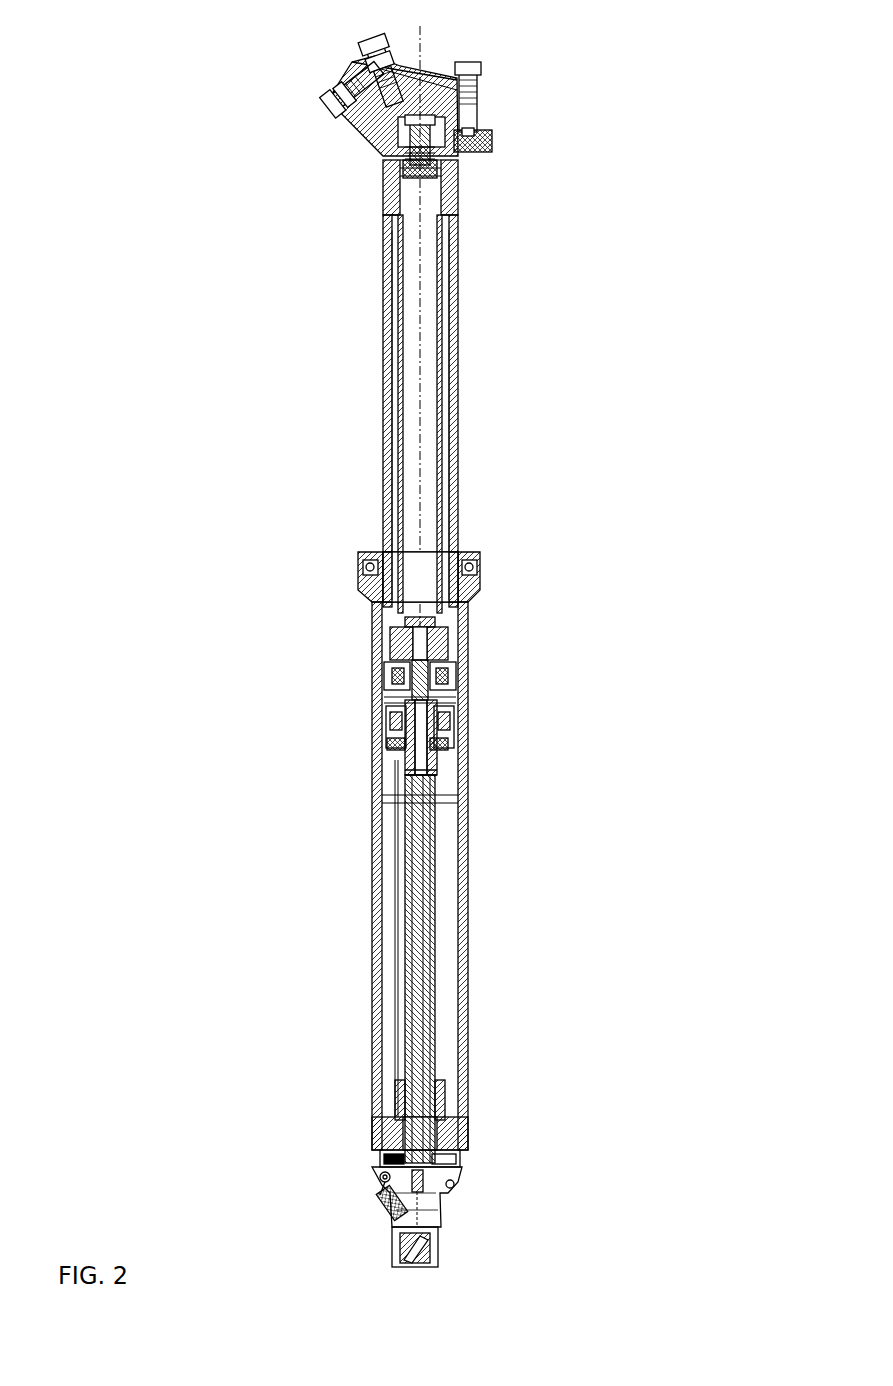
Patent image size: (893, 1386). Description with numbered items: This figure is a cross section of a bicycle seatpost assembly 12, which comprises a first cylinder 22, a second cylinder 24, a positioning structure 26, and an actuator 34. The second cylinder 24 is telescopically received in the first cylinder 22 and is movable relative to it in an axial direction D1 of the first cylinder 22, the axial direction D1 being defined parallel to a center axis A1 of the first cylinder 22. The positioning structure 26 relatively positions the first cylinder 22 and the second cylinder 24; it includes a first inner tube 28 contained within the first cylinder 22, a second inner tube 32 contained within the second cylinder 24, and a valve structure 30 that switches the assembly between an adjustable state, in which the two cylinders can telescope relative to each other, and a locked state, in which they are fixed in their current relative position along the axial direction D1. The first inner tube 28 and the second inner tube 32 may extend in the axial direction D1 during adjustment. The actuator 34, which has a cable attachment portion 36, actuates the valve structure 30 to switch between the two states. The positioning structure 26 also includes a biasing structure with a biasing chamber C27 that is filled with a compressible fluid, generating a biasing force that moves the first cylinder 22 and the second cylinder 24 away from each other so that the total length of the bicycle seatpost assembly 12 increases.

The bicycle seatpost assembly 12 is at (142, 161).
The first cylinder 22 is at (343, 835).
The second cylinder 24 is at (349, 404).
The positioning structure 26 is at (646, 589).
The first inner tube 28 is at (439, 835).
The valve structure 30 is at (421, 612).
The second inner tube 32 is at (439, 488).
The actuator 34 is at (458, 1222).
The cable attachment portion 36 is at (387, 1213).
The center axis A1 is at (428, 38).
The biasing chamber C27 is at (451, 427).
The axial direction D1 is at (146, 896).